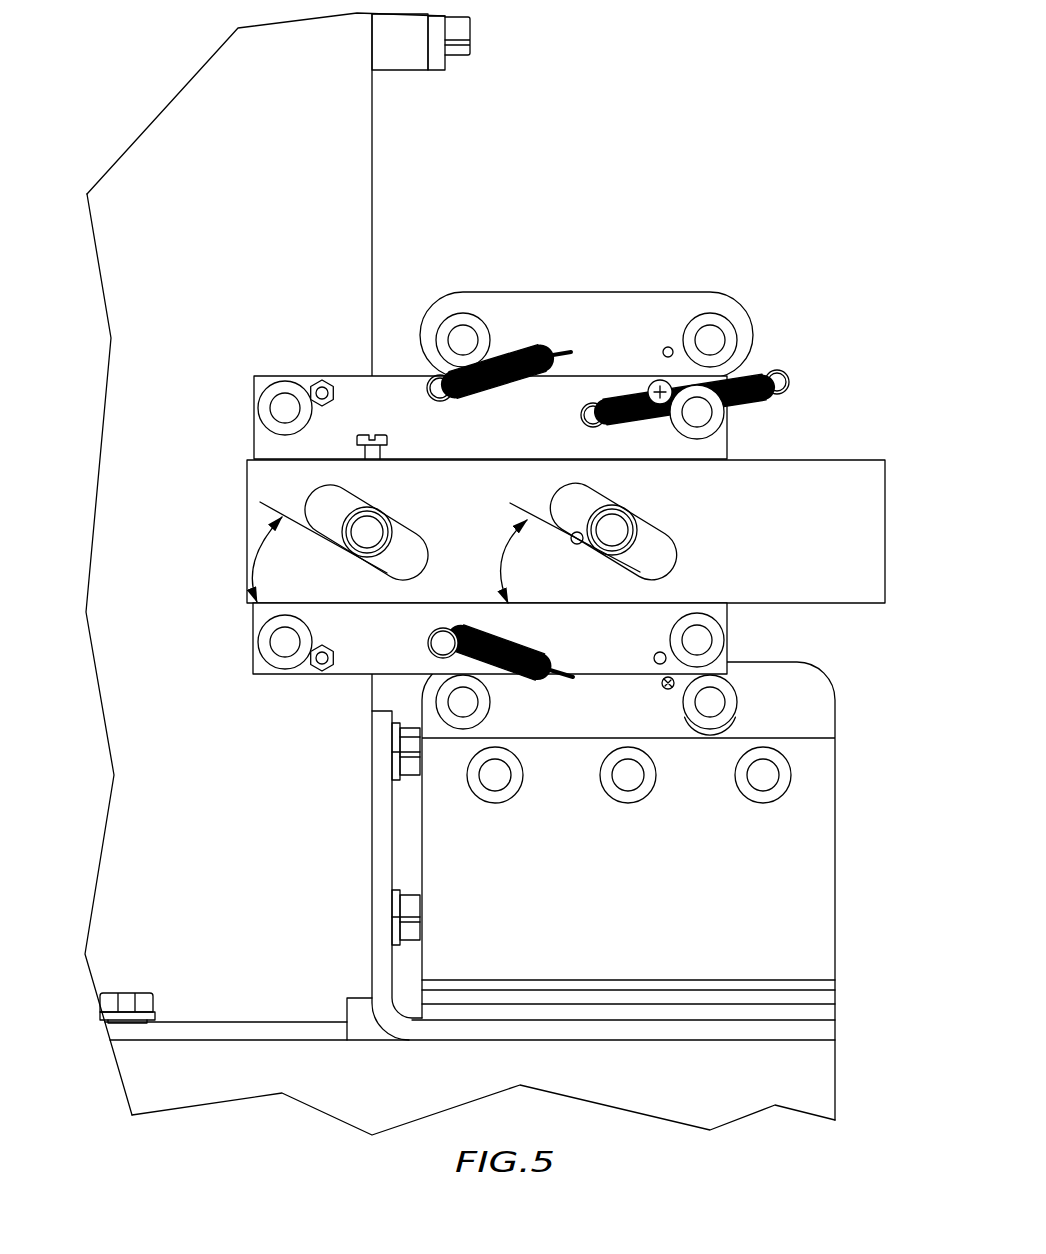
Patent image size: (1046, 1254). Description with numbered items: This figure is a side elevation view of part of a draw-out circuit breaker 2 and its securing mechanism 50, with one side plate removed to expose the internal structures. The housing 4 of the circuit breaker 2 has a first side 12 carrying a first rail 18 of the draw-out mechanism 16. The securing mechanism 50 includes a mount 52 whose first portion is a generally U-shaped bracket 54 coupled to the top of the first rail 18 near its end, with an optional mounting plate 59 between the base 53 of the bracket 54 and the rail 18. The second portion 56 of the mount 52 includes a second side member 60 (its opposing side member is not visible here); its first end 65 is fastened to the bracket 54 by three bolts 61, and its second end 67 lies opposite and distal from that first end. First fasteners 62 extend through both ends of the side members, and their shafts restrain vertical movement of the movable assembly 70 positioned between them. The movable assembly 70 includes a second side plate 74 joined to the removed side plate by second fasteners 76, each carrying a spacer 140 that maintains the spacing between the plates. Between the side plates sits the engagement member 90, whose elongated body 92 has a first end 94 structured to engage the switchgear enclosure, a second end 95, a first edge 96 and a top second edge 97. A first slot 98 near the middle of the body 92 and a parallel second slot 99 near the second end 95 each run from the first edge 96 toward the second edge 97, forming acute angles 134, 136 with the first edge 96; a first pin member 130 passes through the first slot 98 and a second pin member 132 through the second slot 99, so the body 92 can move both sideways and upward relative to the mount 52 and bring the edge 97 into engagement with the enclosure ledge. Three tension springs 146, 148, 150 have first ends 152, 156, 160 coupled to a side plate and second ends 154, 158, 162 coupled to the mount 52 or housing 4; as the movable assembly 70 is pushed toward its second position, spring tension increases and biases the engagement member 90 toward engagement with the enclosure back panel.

The circuit breaker 2 is at (104, 759).
The housing 4 is at (116, 258).
The first side 12 is at (249, 145).
The draw-out mechanism 16 is at (232, 1075).
The first rail 18 is at (328, 1102).
The securing mechanism 50 is at (306, 805).
The mount 52 is at (407, 858).
The base 53 is at (423, 998).
The generally U-shaped bracket 54 is at (418, 835).
The second portion 56 is at (415, 311).
The mounting plate 59 is at (490, 1013).
The second side member 60 is at (597, 335).
The bolts 61 is at (500, 787).
The first fasteners 62 is at (463, 337).
The first end 65 is at (395, 735).
The second end 67 is at (750, 294).
The movable assembly 70 is at (250, 376).
The second side plate 74 is at (511, 445).
The second fasteners 76 is at (285, 405).
The engagement member 90 is at (552, 470).
The elongated body 92 is at (539, 498).
The first end 94 is at (884, 447).
The second end 95 is at (244, 457).
The first edge 96 is at (305, 606).
The second edge 97 is at (270, 456).
The first slot 98 is at (578, 545).
The second slot 99 is at (386, 562).
The first pin member 130 is at (621, 531).
The second pin member 132 is at (368, 525).
The acute angle 134 is at (505, 566).
The acute angle 136 is at (254, 560).
The spacers 140 is at (300, 388).
The tension spring 146 is at (494, 358).
The tension spring 148 is at (630, 387).
The tension spring 150 is at (493, 637).
The first end 152 is at (447, 416).
The second end 154 is at (565, 366).
The first end 156 is at (597, 436).
The second end 158 is at (797, 360).
The first end 160 is at (430, 634).
The second end 162 is at (572, 664).